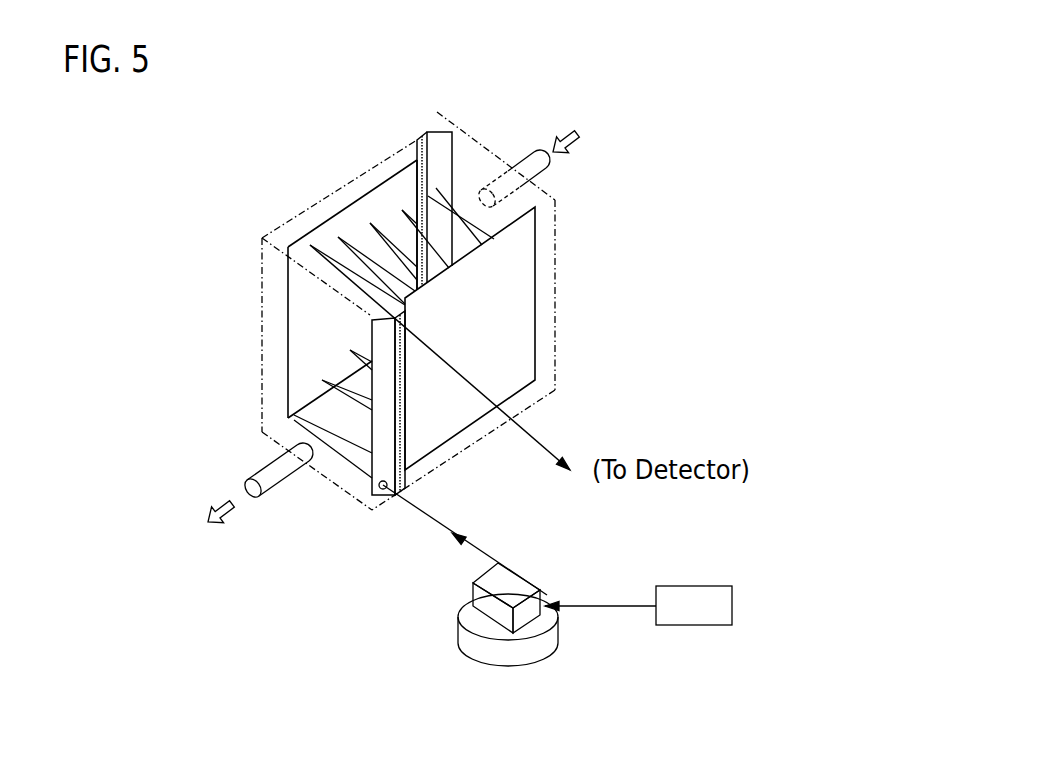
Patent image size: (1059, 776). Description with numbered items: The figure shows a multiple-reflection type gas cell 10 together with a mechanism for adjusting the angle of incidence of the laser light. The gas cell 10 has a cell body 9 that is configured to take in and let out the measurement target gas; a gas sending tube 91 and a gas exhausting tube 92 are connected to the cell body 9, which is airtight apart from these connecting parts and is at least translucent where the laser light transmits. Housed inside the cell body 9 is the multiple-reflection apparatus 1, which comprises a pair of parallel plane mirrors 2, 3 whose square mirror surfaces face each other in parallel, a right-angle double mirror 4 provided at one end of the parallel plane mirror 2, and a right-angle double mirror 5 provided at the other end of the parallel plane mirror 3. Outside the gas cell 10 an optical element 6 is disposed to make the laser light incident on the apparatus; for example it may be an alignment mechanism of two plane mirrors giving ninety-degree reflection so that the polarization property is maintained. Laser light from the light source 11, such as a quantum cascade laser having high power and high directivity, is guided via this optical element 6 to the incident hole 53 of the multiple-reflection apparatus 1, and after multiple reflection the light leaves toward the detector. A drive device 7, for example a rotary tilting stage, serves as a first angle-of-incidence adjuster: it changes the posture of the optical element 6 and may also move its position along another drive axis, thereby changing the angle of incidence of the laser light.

The multiple-reflection type gas cell 10 is at (203, 302).
The multiple-reflection apparatus 1 is at (347, 193).
The parallel plane mirror 2 is at (392, 163).
The parallel plane mirror 3 is at (536, 315).
The right-angle double mirror 4 is at (433, 130).
The right-angle double mirror 5 is at (387, 447).
The incident hole 53 is at (382, 489).
The optical element 6 is at (519, 582).
The drive device 7 is at (560, 632).
The cell body 9 is at (557, 255).
The gas sending tube 91 is at (519, 158).
The gas exhausting tube 92 is at (278, 488).
The light source 11 is at (700, 585).